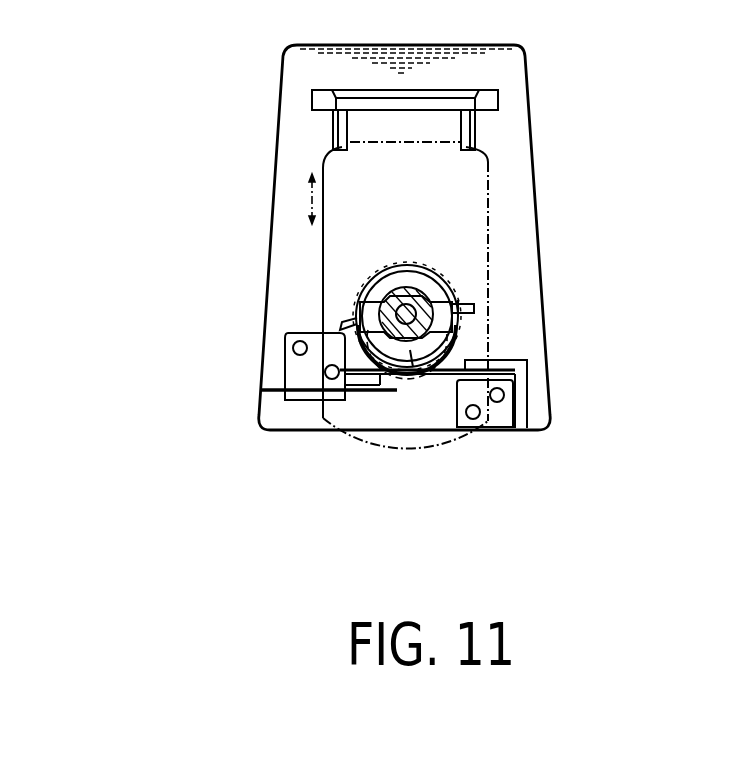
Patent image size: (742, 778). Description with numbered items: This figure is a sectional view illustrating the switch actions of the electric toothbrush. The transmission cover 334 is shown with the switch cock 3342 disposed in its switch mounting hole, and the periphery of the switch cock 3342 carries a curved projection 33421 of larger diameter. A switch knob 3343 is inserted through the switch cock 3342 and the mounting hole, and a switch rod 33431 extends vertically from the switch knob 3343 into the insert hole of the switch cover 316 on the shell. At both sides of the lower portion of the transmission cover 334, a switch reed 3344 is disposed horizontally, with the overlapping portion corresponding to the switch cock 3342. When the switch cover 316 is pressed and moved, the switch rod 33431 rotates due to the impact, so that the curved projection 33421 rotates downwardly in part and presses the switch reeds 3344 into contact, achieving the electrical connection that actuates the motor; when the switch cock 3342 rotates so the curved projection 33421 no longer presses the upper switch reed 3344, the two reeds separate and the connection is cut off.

The transmission cover 334 is at (295, 123).
The switch cover 316 is at (322, 272).
The switch cock 3342 is at (420, 258).
The switch knob 3343 is at (447, 282).
The curved projection 33421 is at (473, 320).
The switch reed 3344 is at (512, 403).
The switch rod 33431 is at (413, 367).